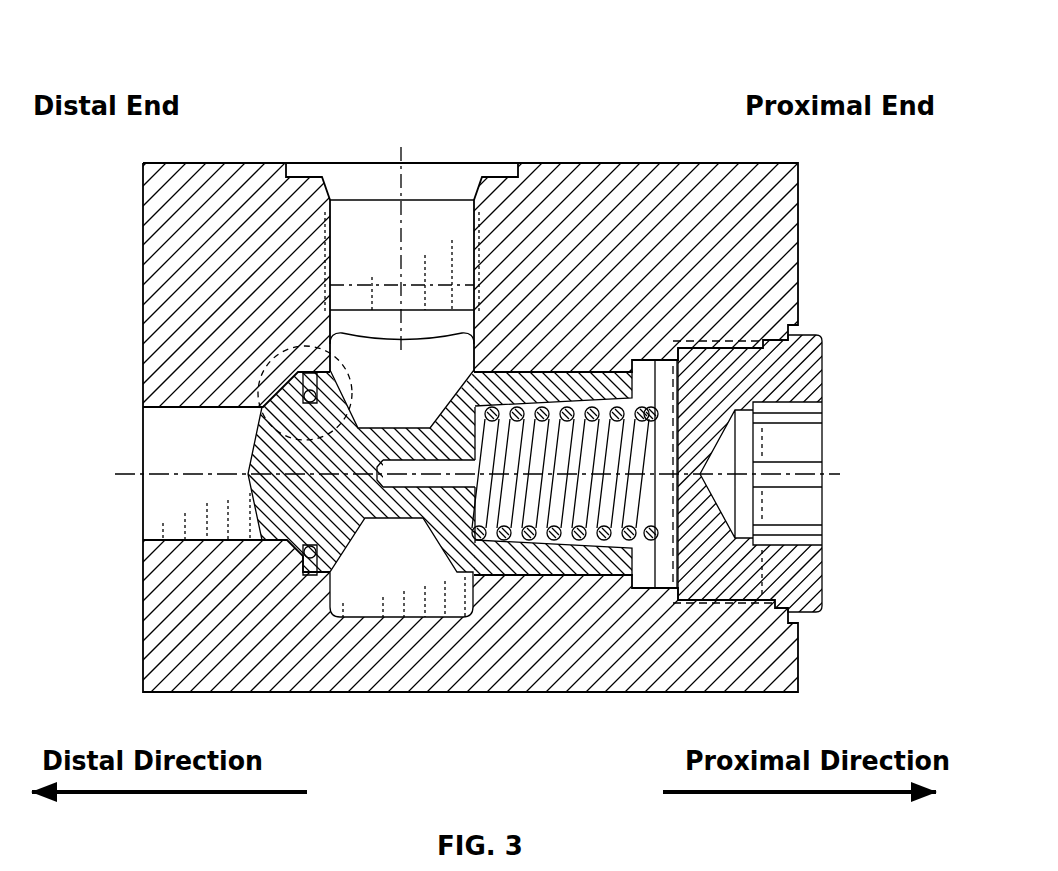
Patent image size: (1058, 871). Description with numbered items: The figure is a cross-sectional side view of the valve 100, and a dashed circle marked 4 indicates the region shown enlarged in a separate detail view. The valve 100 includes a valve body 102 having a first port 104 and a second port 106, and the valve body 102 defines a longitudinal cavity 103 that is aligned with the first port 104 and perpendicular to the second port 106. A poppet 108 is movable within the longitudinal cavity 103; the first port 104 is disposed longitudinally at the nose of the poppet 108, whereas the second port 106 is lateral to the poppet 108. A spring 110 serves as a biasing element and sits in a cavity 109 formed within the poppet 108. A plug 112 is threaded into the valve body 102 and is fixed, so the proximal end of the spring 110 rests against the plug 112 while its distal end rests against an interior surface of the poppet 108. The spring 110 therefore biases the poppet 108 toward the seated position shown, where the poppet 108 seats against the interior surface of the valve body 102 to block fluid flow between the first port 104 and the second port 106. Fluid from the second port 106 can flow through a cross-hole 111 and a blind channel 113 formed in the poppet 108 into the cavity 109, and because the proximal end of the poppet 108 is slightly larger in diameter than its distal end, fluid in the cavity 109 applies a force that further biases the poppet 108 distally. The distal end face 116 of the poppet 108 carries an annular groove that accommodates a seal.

The valve 100 is at (158, 42).
The valve body 102 is at (143, 628).
The longitudinal cavity 103 is at (384, 552).
The first port 104 is at (128, 502).
The second port 106 is at (434, 124).
The poppet 108 is at (551, 378).
The cavity 109 is at (641, 378).
The spring 110 is at (583, 503).
The cross-hole 111 is at (395, 478).
The plug 112 is at (824, 338).
The blind channel 113 is at (447, 462).
The distal end face 116 is at (238, 452).
The detail view circle (FIG. 4) 4 is at (280, 348).